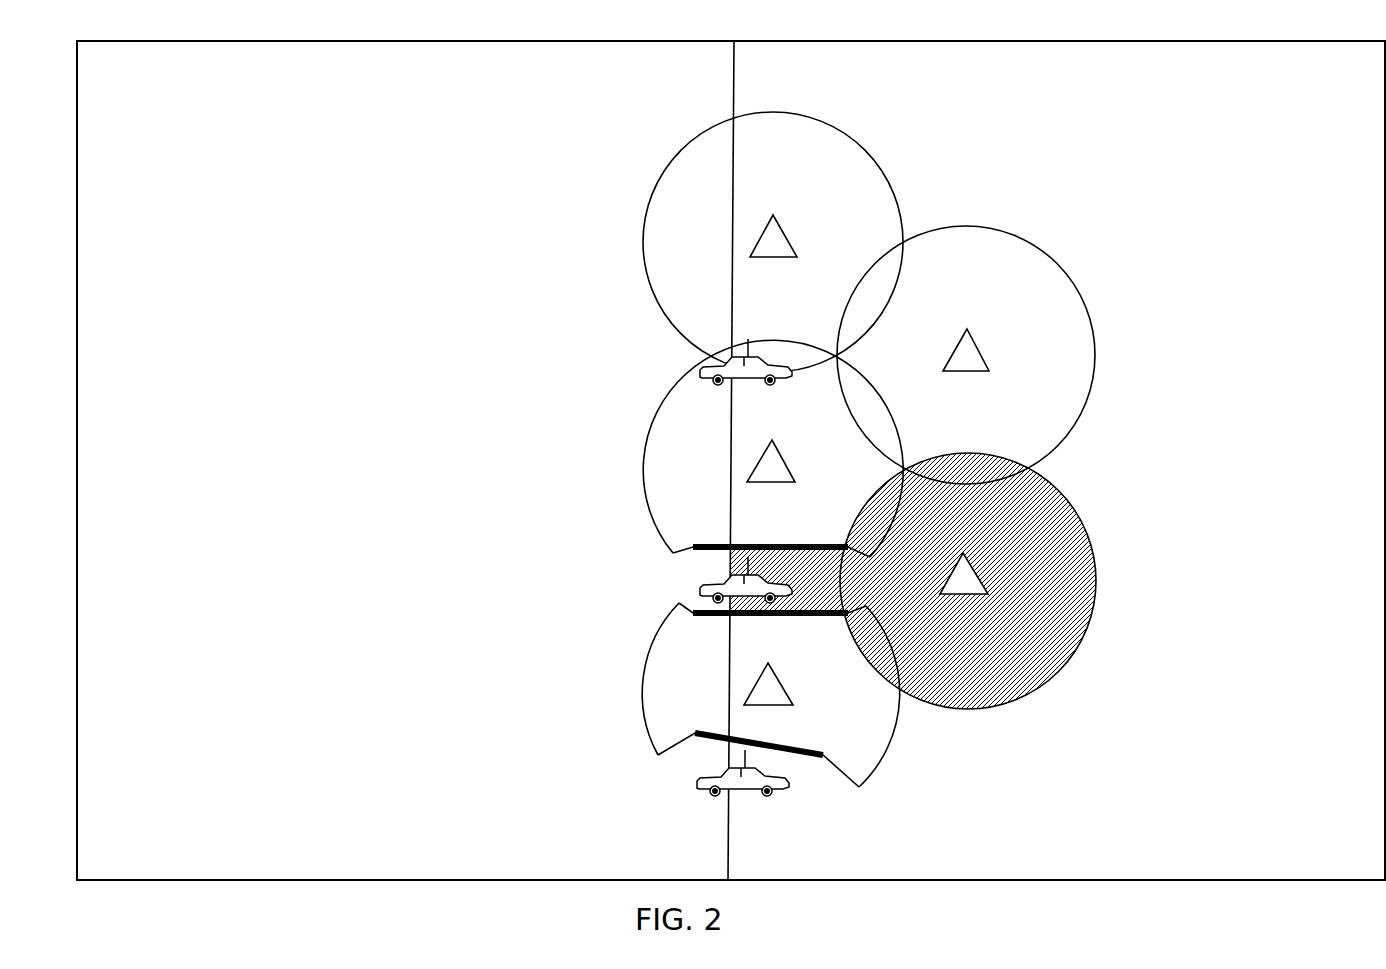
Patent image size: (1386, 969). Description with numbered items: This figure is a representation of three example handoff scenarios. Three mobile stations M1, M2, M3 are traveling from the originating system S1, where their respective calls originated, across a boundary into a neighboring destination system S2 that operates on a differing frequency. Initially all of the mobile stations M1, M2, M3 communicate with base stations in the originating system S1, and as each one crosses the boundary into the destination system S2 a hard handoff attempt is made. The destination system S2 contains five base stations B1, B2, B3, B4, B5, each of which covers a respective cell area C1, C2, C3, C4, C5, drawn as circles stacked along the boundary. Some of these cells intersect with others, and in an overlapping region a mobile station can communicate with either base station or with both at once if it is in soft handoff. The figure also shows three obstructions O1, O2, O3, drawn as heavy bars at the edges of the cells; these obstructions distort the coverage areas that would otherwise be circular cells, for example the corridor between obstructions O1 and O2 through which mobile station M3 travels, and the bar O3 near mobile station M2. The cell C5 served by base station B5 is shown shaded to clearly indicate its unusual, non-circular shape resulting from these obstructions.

The originating system S1 is at (77, 505).
The destination system S2 is at (1385, 286).
The cell area C1 is at (770, 695).
The cell area C2 is at (773, 448).
The cell area C3 is at (773, 242).
The cell area C4 is at (966, 355).
The cell area C5 is at (913, 581).
The base station B1 is at (775, 675).
The base station B2 is at (778, 451).
The base station B3 is at (783, 228).
The base station B4 is at (973, 341).
The base station B5 is at (969, 564).
The mobile station M1 is at (722, 386).
The mobile station M2 is at (782, 790).
The mobile station M3 is at (712, 582).
The obstruction O1 is at (718, 542).
The obstruction O2 is at (718, 620).
The obstruction O3 is at (718, 730).